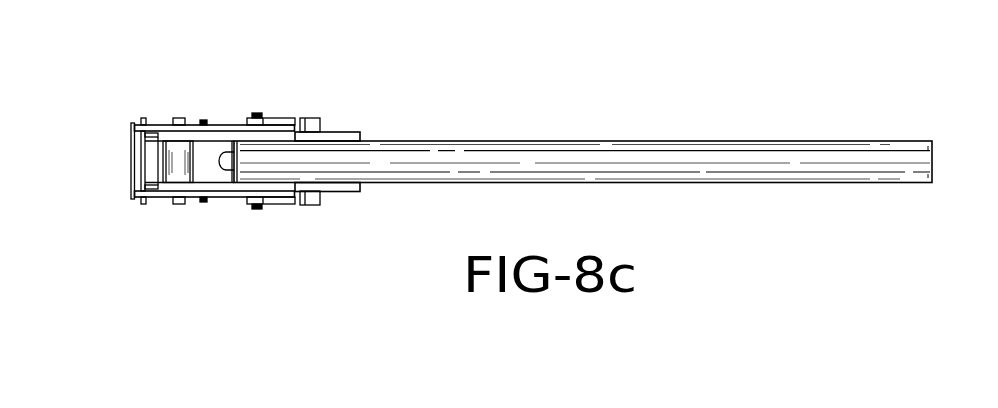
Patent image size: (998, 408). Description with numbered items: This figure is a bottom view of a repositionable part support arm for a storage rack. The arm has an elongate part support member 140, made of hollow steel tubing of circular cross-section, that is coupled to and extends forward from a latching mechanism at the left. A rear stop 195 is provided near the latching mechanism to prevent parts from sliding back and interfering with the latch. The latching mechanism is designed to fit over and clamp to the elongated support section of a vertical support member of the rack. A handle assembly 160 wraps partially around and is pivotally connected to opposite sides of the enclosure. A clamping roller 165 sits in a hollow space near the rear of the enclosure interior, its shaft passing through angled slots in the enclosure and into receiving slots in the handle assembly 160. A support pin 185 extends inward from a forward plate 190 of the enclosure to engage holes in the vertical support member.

The part support member 140 is at (755, 162).
The handle assembly 160 is at (130, 150).
The clamping roller 165 is at (178, 160).
The support pin 185 is at (225, 160).
The forward plate 190 is at (233, 150).
The rear stop 195 is at (313, 127).